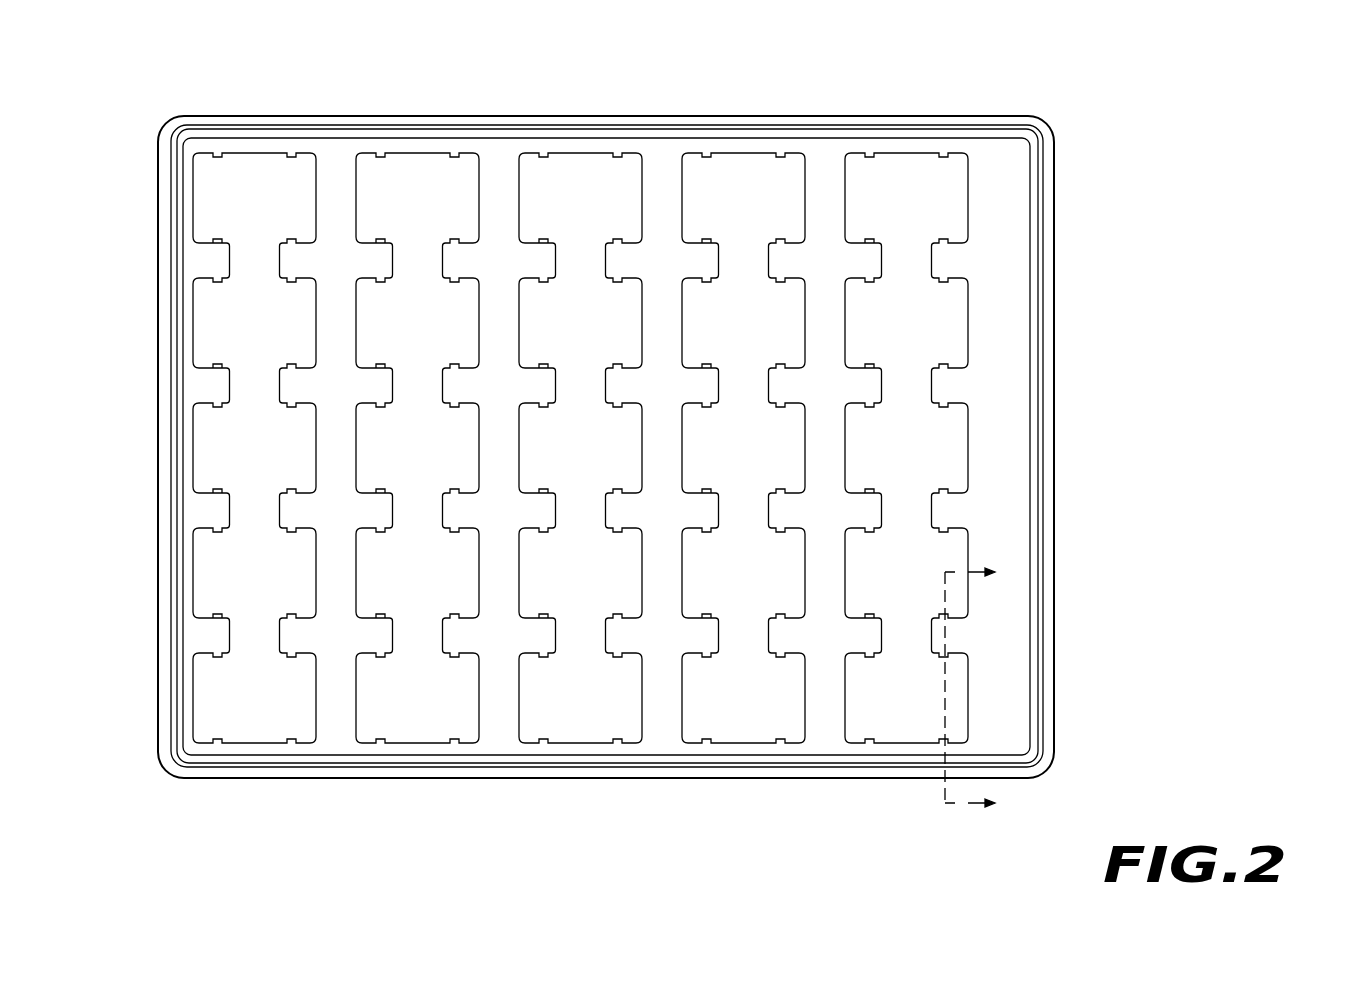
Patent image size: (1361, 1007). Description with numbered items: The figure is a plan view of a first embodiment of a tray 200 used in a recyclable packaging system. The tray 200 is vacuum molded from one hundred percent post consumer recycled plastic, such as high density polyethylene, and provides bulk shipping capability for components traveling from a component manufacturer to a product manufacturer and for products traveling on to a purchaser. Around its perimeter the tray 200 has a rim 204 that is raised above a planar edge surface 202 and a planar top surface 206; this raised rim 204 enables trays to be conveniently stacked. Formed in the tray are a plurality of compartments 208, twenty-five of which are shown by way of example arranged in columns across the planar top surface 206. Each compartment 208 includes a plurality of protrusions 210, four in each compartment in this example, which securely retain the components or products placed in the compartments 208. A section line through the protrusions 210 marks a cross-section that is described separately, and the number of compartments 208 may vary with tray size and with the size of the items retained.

The tray 200 is at (705, 431).
The planar edge surface 202 is at (346, 122).
The rim 204 is at (178, 130).
The planar top surface 206 is at (1003, 162).
The compartments 208 is at (532, 393).
The protrusions 210 is at (218, 282).